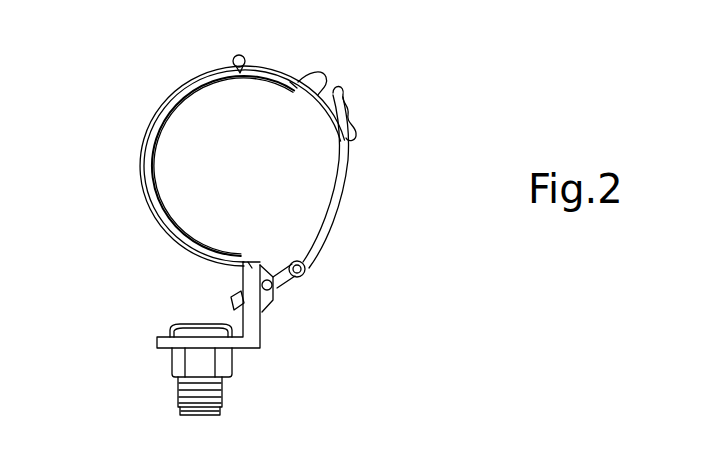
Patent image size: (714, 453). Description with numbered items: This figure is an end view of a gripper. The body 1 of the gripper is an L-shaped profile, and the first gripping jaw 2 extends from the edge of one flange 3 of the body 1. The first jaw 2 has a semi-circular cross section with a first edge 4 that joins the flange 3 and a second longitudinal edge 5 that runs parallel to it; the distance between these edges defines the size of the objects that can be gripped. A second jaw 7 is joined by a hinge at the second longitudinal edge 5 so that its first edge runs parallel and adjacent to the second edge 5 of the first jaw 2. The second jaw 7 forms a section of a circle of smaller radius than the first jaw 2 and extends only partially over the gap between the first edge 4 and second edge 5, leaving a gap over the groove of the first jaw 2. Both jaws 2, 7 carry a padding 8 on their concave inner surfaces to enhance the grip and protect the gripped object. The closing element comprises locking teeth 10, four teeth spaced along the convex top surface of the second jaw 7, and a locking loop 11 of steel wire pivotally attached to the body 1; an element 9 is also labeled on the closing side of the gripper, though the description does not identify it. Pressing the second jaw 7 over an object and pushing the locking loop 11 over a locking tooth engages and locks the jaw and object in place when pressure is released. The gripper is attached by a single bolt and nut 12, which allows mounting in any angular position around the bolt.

The body 1 is at (256, 330).
The first gripping jaw 2 is at (137, 167).
The flange 3 is at (243, 283).
The first edge 4 is at (257, 265).
The second longitudinal edge 5 is at (226, 63).
The second jaw 7 is at (277, 68).
The padding 8 is at (172, 104).
The latch arm 9 is at (333, 180).
The locking teeth 10 is at (348, 100).
The locking loop 11 is at (335, 228).
The bolt and nut 12 is at (222, 367).